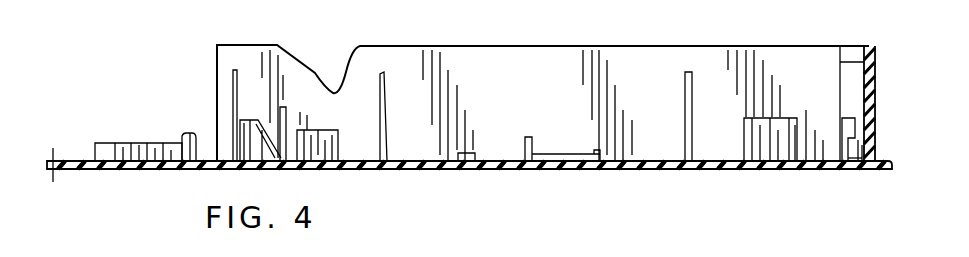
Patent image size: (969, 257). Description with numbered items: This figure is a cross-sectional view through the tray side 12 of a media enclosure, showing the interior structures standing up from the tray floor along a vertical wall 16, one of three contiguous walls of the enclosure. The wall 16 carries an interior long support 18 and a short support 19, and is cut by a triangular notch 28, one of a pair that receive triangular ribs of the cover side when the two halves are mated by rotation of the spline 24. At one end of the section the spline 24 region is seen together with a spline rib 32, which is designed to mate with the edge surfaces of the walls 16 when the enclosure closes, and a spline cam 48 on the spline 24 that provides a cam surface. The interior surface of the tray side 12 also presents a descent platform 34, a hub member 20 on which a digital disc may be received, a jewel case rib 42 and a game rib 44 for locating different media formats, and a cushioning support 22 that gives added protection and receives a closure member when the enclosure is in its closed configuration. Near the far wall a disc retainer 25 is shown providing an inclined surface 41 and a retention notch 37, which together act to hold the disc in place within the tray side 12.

The tray side 12 is at (637, 170).
The vertical wall 16 is at (877, 112).
The long support 18 is at (685, 130).
The short support 19 is at (525, 146).
The hub member 20 is at (568, 155).
The cushioning support 22 is at (853, 60).
The spline 24 is at (127, 170).
The disc retainer 25 is at (860, 150).
The triangular notch 28 is at (315, 73).
The spline rib 32 is at (120, 143).
The descent platform 34 is at (251, 120).
The retention notch 37 is at (858, 151).
The inclined surface 41 is at (848, 142).
The jewel case rib 42 is at (320, 130).
The game rib 44 is at (744, 145).
The spline cam 48 is at (186, 133).